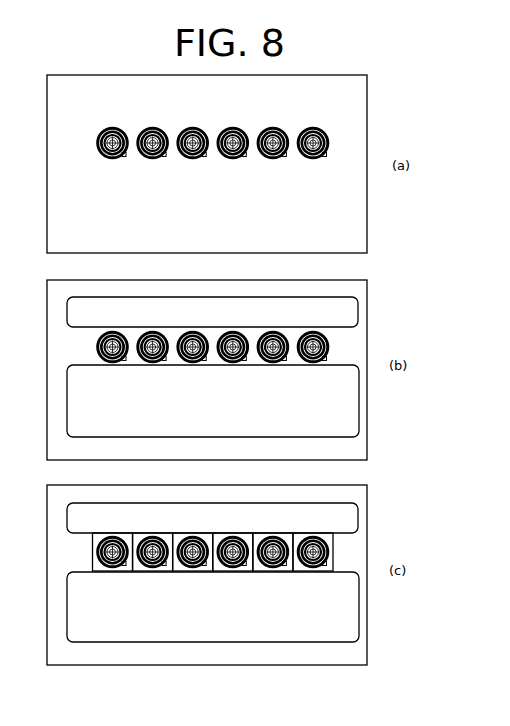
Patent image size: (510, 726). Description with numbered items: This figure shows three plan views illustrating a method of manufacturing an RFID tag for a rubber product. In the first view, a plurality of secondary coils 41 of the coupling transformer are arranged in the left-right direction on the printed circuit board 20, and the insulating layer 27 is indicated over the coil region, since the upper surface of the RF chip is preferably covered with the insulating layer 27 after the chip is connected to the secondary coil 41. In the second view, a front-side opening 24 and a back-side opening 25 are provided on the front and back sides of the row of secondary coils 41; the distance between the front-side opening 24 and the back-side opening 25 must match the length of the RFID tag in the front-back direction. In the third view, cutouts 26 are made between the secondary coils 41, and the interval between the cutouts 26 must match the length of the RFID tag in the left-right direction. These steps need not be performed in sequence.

The insulating layer 27 is at (155, 128).
The secondary coil 41 is at (104, 159).
The printed circuit board 20 is at (105, 240).
The back-side opening 25 is at (282, 310).
The front-side opening 24 is at (257, 420).
The cutout 26 is at (173, 572).